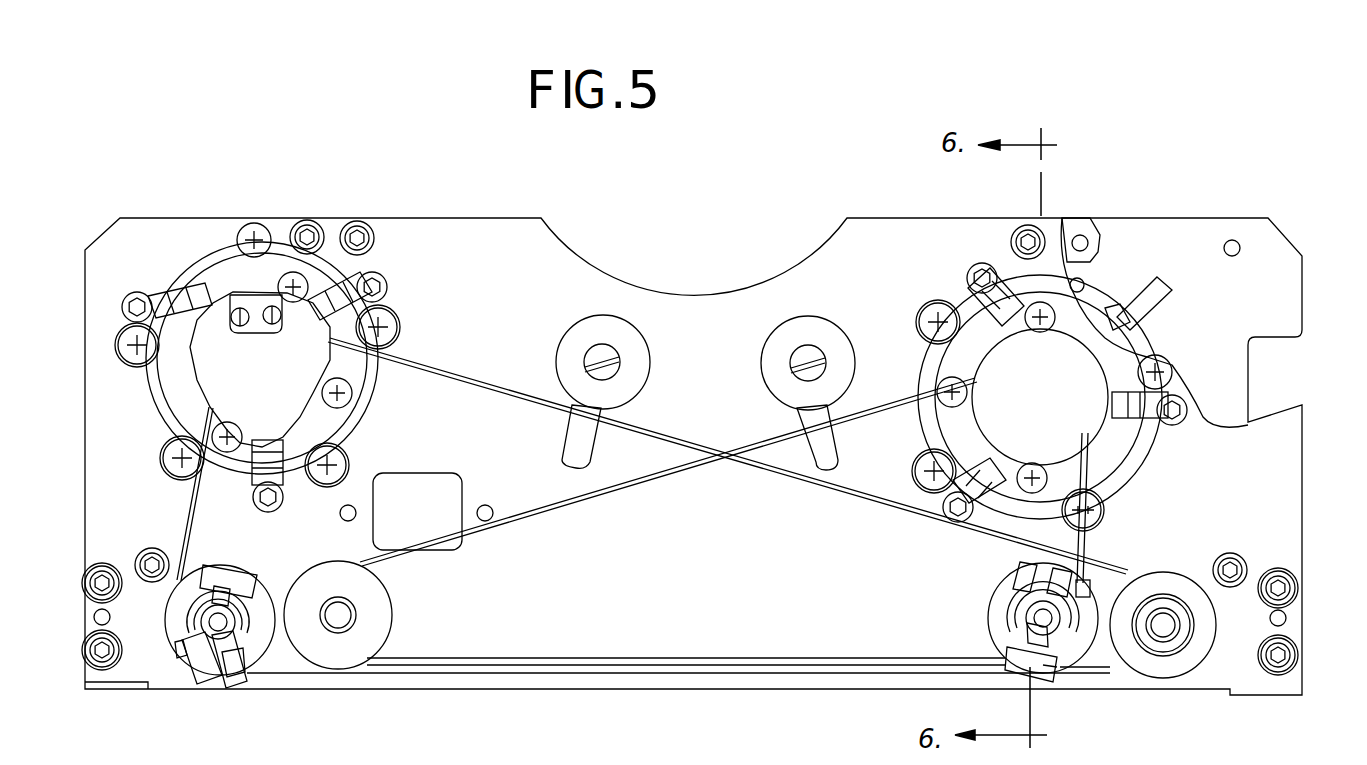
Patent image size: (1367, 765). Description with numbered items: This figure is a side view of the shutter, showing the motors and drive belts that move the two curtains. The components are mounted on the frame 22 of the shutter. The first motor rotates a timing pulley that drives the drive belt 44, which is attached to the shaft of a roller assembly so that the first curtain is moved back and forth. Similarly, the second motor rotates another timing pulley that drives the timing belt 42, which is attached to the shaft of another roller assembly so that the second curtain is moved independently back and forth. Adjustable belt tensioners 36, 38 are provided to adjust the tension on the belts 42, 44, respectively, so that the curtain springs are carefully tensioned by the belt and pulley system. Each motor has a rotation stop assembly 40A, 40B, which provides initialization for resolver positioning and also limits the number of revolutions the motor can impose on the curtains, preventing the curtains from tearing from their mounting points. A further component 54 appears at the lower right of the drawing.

The frame 22 is at (1285, 530).
The adjustable belt tensioner 36 is at (587, 312).
The adjustable belt tensioner 38 is at (848, 333).
The rotation stop assembly 40A is at (287, 394).
The rotation stop assembly 40B is at (1080, 428).
The timing belt 42 is at (800, 485).
The drive belt 44 is at (635, 480).
The bracket 54 is at (1060, 667).